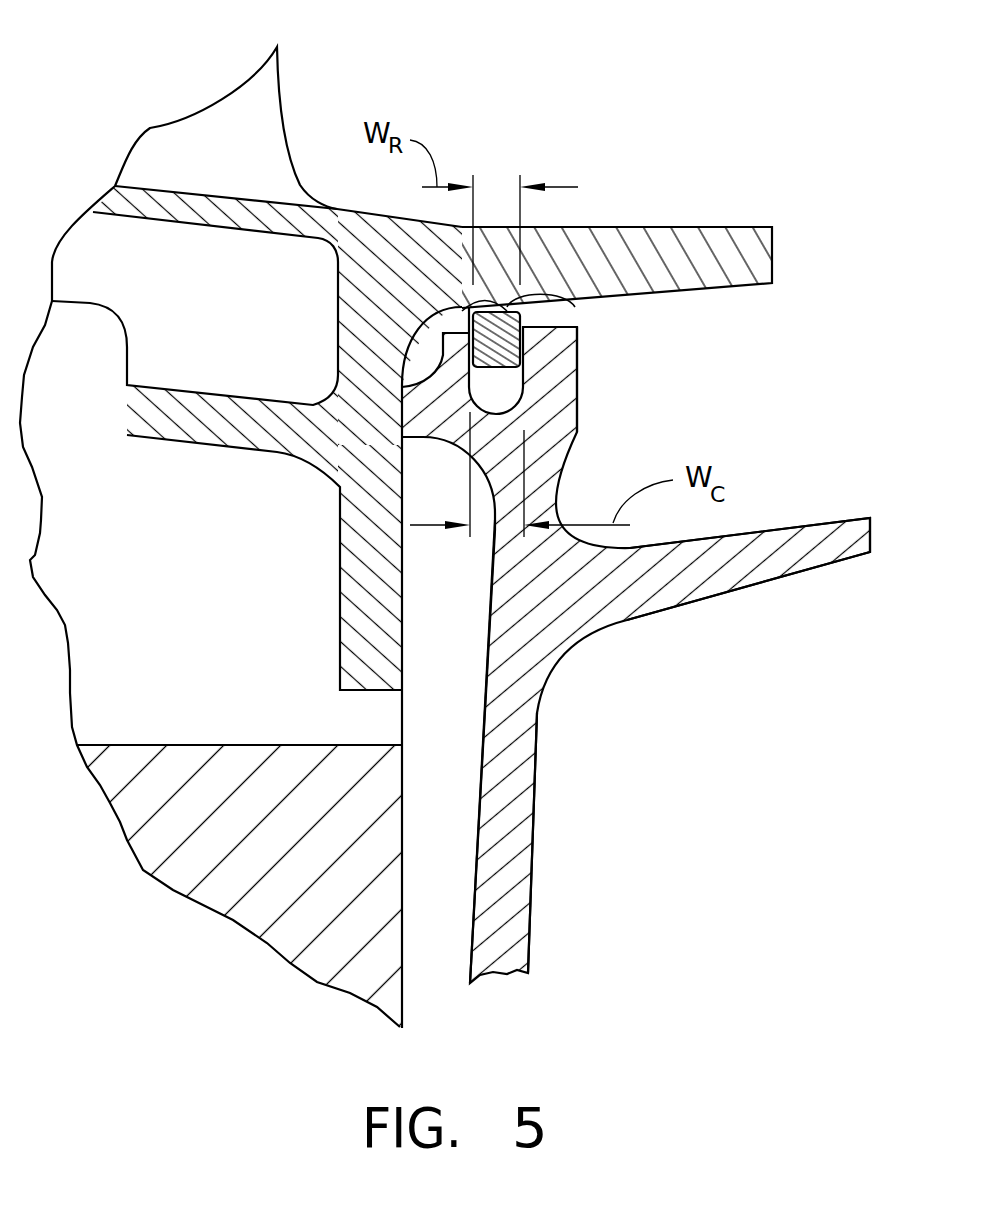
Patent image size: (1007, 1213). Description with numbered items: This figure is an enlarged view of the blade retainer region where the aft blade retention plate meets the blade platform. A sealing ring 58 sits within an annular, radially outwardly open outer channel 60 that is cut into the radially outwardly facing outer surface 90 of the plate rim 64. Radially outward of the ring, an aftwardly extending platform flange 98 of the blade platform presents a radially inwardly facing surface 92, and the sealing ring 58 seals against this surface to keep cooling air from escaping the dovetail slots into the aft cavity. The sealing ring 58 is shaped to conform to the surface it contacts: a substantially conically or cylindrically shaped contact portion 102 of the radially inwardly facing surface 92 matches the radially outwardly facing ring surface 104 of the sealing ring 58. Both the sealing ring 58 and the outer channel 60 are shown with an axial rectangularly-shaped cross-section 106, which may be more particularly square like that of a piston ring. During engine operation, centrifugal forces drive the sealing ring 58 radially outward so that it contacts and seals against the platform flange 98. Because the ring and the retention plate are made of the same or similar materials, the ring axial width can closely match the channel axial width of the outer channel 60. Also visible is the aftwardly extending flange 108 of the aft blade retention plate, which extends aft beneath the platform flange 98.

The sealing ring 58 is at (507, 342).
The outer channel 60 is at (470, 378).
The plate rim 64 is at (578, 348).
The outer surface 90 is at (463, 307).
The radially inwardly facing surface 92 is at (462, 312).
The platform flange 98 is at (683, 228).
The contact portion 102 is at (568, 306).
The ring surface 104 is at (503, 303).
The rectangularly-shaped cross-section 106 is at (497, 368).
The aftwardly extending flange 108 is at (708, 600).